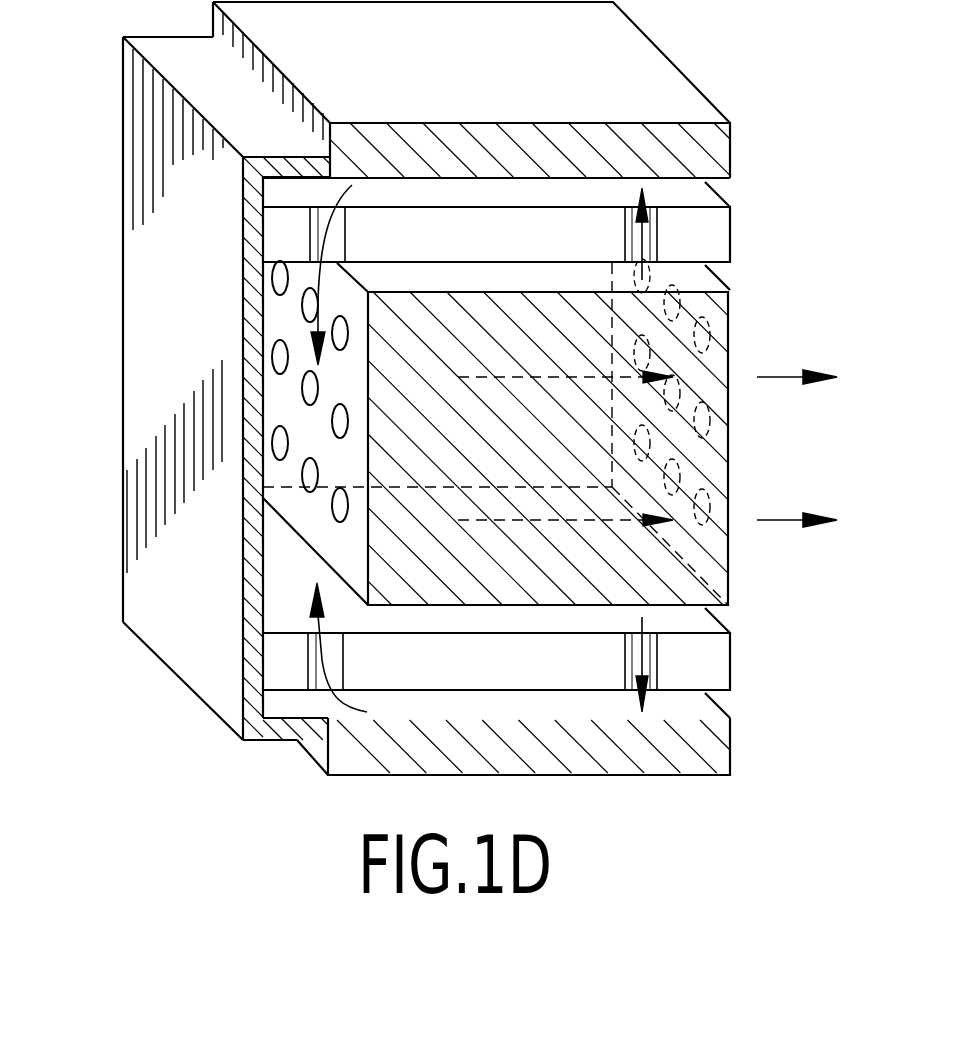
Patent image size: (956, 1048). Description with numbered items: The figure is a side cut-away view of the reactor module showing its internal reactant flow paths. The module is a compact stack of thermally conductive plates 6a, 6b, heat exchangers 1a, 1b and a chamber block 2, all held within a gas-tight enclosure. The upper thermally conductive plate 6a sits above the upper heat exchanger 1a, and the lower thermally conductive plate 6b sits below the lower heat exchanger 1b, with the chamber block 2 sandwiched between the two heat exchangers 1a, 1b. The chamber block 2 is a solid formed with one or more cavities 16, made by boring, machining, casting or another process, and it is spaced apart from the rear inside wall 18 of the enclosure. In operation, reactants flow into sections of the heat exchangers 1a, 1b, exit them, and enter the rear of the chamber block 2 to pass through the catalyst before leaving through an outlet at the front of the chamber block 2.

The rear inside wall 18 is at (143, 382).
The thermally conductive plate 6a is at (720, 150).
The heat exchanger 1a is at (720, 237).
The chamber block 2 is at (720, 562).
The cavity 16 is at (722, 421).
The heat exchanger 1b is at (720, 663).
The thermally conductive plate 6b is at (720, 748).